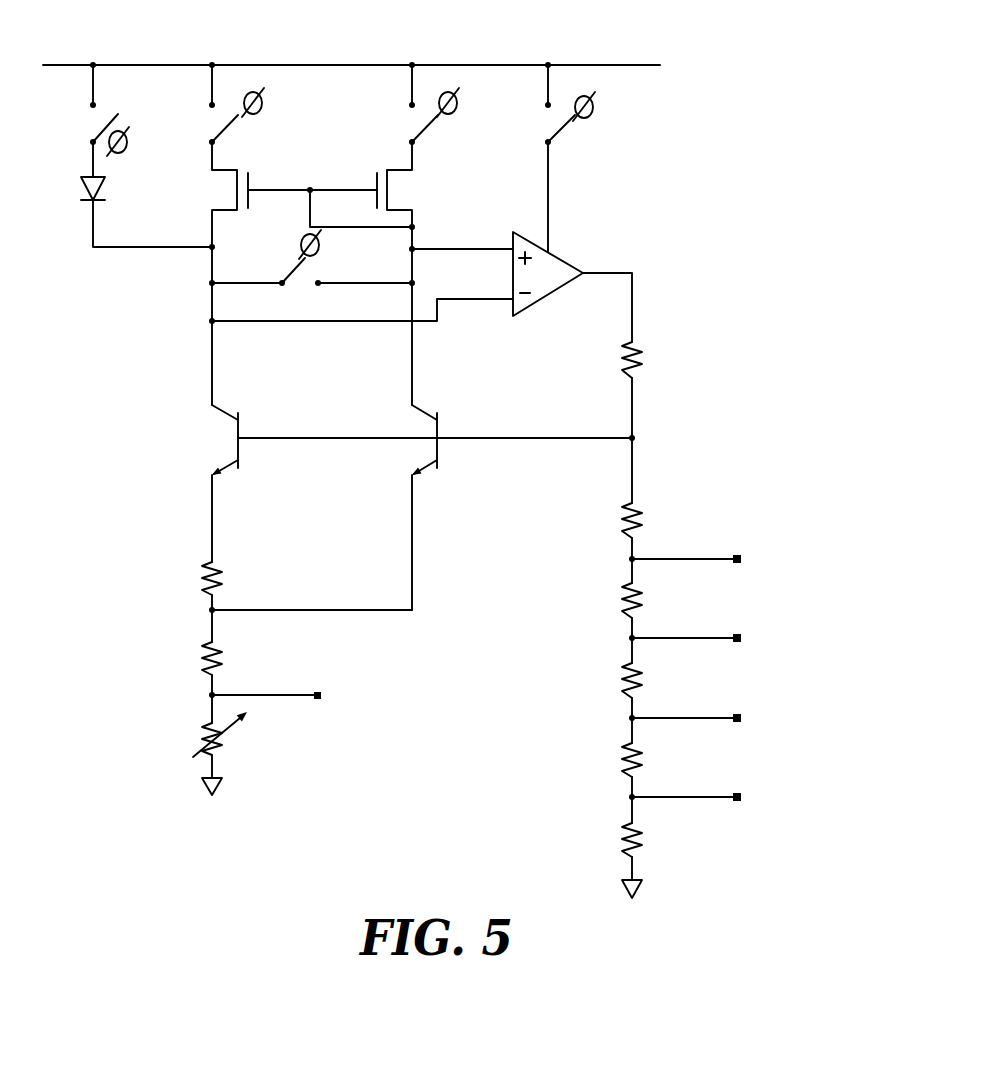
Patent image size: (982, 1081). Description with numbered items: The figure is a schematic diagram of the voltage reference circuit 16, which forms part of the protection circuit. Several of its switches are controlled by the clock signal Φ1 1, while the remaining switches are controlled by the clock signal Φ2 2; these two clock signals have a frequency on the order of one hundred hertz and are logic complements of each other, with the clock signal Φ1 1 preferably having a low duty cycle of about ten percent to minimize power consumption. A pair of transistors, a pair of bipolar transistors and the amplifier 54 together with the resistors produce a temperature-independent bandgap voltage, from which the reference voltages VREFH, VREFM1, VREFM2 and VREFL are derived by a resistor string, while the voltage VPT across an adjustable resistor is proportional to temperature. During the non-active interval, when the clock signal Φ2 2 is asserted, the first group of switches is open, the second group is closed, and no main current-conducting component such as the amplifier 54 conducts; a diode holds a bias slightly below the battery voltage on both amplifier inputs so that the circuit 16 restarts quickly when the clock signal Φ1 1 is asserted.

The voltage reference circuit 16 is at (744, 212).
The amplifier 54 is at (560, 256).
The clock signal Φ 1 is at (427, 110).
The clock signal Φ 2 is at (222, 200).